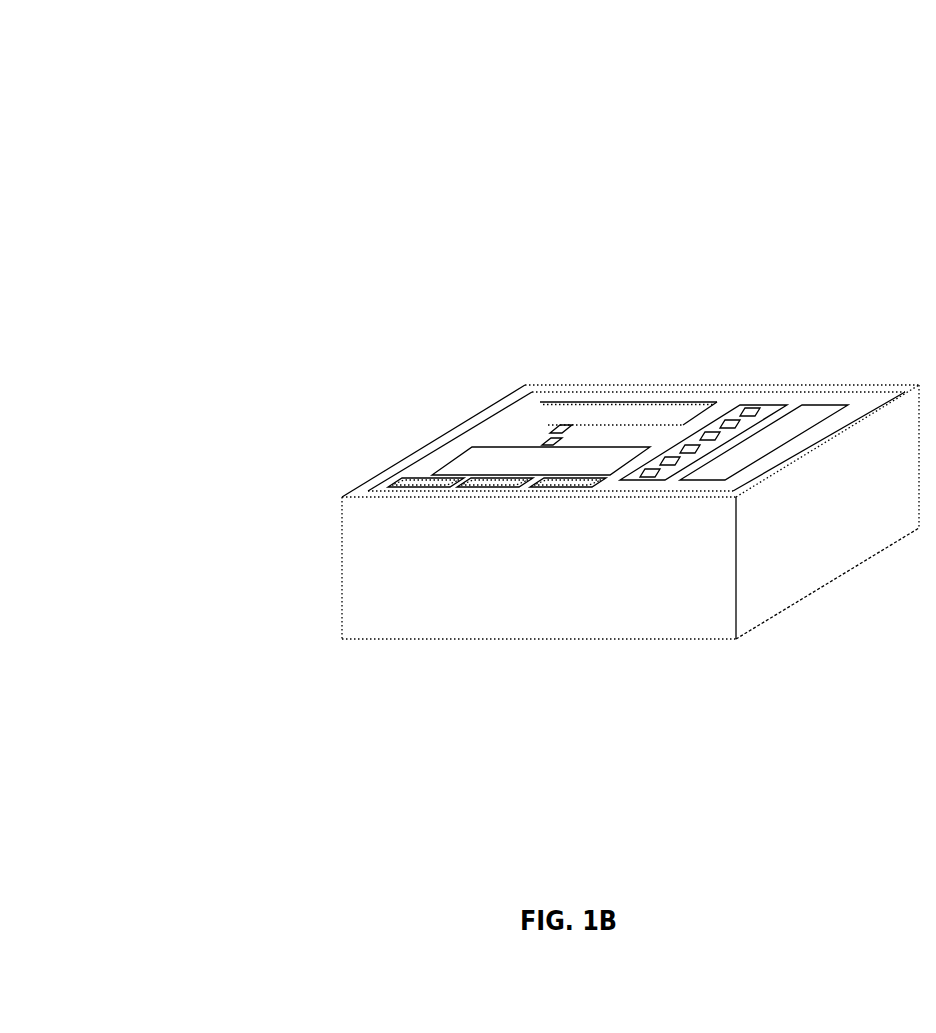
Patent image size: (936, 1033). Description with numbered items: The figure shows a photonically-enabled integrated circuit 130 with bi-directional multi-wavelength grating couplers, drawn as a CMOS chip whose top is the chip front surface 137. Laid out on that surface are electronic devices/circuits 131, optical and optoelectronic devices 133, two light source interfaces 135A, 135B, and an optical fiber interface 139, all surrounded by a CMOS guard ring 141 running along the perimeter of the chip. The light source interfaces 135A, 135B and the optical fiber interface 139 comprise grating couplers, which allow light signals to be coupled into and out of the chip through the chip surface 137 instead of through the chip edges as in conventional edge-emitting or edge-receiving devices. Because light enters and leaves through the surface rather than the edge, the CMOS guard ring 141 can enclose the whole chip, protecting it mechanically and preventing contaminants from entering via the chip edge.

The photonically-enabled integrated circuit 130 is at (182, 105).
The electronic devices/circuits 131 is at (485, 487).
The optical and optoelectronic devices 133 is at (496, 420).
The light source interface 135A is at (420, 312).
The light source interface 135B is at (420, 312).
The chip front surface 137 is at (667, 396).
The optical fiber interface 139 is at (762, 406).
The CMOS guard ring 141 is at (848, 532).